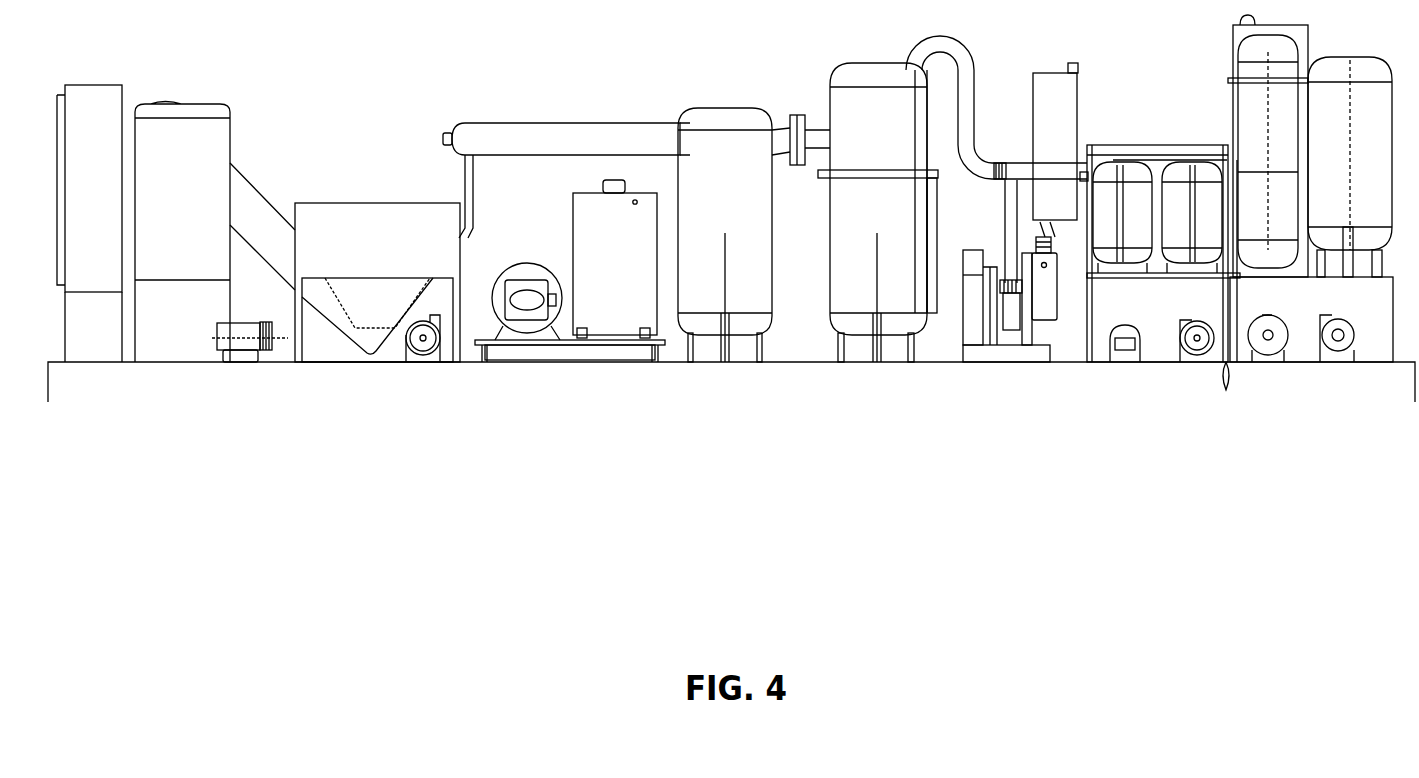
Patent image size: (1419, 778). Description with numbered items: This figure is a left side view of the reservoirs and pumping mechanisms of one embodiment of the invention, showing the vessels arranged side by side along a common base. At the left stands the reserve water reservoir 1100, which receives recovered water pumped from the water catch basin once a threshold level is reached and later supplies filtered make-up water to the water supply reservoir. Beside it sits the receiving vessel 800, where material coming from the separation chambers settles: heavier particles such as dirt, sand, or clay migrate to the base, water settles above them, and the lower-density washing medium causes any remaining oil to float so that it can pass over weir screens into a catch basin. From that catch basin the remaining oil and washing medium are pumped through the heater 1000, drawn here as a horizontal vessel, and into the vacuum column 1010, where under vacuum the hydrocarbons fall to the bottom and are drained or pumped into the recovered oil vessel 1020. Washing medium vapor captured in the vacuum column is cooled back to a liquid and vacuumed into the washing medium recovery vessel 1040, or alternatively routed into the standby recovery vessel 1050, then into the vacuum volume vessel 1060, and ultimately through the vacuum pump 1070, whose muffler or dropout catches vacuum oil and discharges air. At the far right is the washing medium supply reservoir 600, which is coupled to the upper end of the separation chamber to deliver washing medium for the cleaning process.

The reserve water reservoir 1100 is at (176, 223).
The receiving vessel 800 is at (377, 282).
The heater 1000 is at (566, 180).
The vacuum column 1010 is at (754, 235).
The recovered oil vessel 1020 is at (952, 199).
The vacuum pump 1070 is at (1029, 212).
The vacuum volume vessel 1060 is at (1122, 217).
The standby recovery vessel 1050 is at (1192, 217).
The washing medium recovery vessel 1040 is at (1268, 146).
The washing medium supply reservoir 600 is at (1311, 209).